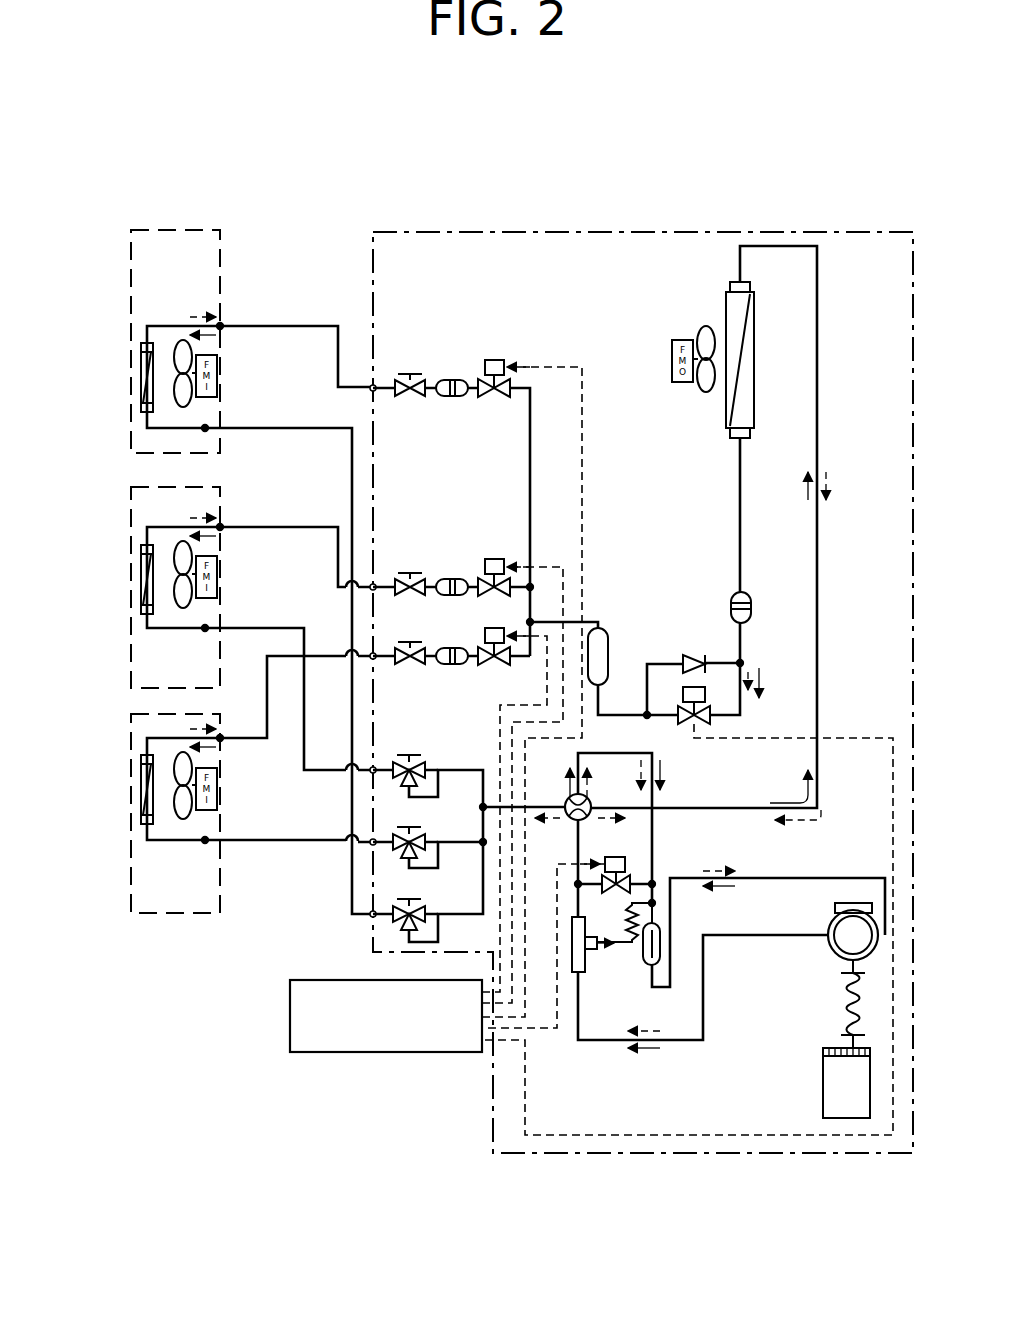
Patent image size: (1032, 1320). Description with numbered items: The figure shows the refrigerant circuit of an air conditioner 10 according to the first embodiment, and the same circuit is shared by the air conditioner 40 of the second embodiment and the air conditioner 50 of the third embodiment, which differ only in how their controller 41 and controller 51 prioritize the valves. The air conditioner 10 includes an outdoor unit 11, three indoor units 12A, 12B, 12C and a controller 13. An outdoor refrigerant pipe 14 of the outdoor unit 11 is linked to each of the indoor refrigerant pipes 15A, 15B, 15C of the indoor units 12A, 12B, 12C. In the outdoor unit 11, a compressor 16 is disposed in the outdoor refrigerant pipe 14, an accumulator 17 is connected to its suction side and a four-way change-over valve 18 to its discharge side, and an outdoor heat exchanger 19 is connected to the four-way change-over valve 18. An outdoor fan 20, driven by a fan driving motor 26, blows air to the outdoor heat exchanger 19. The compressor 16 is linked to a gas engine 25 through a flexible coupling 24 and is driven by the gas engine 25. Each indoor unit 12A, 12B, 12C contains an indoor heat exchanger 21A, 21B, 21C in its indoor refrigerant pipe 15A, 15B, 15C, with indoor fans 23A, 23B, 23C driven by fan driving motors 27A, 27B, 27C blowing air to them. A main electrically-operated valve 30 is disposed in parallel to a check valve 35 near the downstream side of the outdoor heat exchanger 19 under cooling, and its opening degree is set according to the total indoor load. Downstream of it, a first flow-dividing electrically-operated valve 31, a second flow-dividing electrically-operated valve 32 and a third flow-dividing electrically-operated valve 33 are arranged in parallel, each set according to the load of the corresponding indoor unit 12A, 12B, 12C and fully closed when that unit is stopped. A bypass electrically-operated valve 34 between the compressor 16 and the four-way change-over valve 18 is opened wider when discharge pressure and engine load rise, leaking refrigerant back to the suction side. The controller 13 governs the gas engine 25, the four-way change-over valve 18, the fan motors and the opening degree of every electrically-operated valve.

The air conditioner 10 is at (388, 144).
The air conditioner 40 is at (388, 144).
The air conditioner 50 is at (412, 186).
The outdoor unit 11 is at (722, 232).
The indoor unit 12A is at (207, 230).
The indoor unit 12B is at (220, 498).
The indoor unit 12C is at (205, 913).
The controller 13 is at (425, 748).
The controller 41 is at (425, 748).
The controller 51 is at (310, 1052).
The outdoor refrigerant pipe 14 is at (740, 548).
The indoor refrigerant pipe 15A is at (160, 326).
The indoor refrigerant pipe 15B is at (170, 628).
The indoor refrigerant pipe 15C is at (172, 840).
The compressor 16 is at (835, 950).
The accumulator 17 is at (645, 955).
The four-way change-over valve 18 is at (585, 800).
The outdoor heat exchanger 19 is at (735, 365).
The outdoor fan 20 is at (726, 420).
The indoor heat exchanger 21A is at (141, 370).
The indoor heat exchanger 21B is at (141, 570).
The indoor heat exchanger 21C is at (141, 782).
The indoor fan 23A is at (190, 348).
The indoor fan 23B is at (190, 549).
The indoor fan 23C is at (190, 761).
The flexible coupling 24 is at (845, 1000).
The gas engine 25 is at (823, 1090).
The fan driving motor 26 is at (680, 340).
The fan driving motor 27A is at (217, 385).
The fan driving motor 27B is at (217, 587).
The fan driving motor 27C is at (217, 797).
The main electrically-operated valve 30 is at (694, 728).
The first flow-dividing electrically-operated valve 31 is at (492, 398).
The second flow-dividing electrically-operated valve 32 is at (488, 596).
The third flow-dividing electrically-operated valve 33 is at (488, 665).
The bypass electrically-operated valve 34 is at (635, 845).
The check valve 35 is at (690, 655).